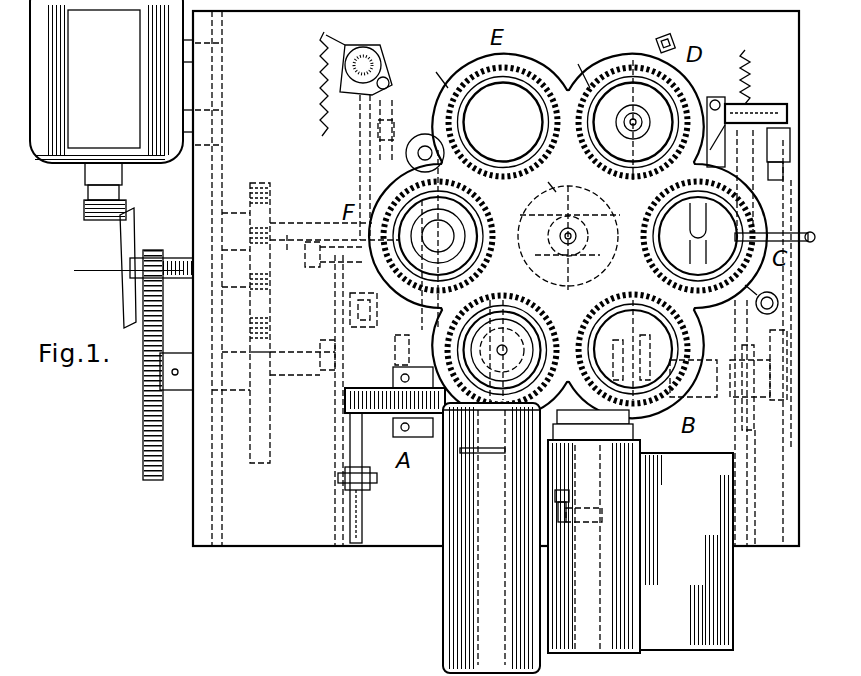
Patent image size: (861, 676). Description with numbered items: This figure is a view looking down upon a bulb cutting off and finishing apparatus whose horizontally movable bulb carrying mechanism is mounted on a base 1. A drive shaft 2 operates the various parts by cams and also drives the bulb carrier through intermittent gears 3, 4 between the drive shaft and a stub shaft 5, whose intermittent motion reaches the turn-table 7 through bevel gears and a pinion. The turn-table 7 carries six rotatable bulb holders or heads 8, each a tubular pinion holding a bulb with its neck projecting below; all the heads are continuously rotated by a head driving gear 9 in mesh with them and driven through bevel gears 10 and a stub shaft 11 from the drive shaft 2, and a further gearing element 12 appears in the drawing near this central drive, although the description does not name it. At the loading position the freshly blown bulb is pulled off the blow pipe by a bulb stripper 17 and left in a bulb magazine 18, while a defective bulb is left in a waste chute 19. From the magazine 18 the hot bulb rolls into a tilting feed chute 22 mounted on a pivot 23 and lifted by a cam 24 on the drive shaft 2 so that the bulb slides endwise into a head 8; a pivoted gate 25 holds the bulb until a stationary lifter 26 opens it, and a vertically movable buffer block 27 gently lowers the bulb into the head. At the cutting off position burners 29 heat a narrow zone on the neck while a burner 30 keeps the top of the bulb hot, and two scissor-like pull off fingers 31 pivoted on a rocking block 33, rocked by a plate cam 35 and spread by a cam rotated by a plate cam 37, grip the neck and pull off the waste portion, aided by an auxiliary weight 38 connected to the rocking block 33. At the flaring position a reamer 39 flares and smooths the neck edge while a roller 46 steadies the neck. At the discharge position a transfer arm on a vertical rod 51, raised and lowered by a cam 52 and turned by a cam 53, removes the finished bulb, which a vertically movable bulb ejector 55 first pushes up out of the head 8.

The base 1 is at (248, 165).
The drive shaft 2 is at (143, 375).
The intermittent gear 3 is at (262, 355).
The intermittent gear 4 is at (262, 212).
The stub shaft 5 is at (287, 252).
The turn-table 7 is at (435, 74).
The bulb holder or head 8 is at (465, 115).
The head driving gear 9 is at (572, 147).
The bevel gears 10 is at (597, 179).
The stub shaft 11 is at (562, 255).
The gear 12 is at (543, 179).
The bulb stripper 17 is at (630, 428).
The bulb magazine 18 is at (594, 546).
The waste chute 19 is at (686, 551).
The tilting feed chute 22 is at (491, 538).
The pivot 23 is at (352, 413).
The cam 24 is at (330, 402).
The pivoted gate 25 is at (490, 455).
The stationary lifter 26 is at (432, 440).
The buffer block 27 is at (502, 370).
The burners 29 is at (761, 309).
The burner 30 is at (775, 226).
The pull off fingers 31 is at (698, 236).
The rocking block 33 is at (722, 97).
The plate cam 35 is at (780, 400).
The plate cam 37 is at (748, 432).
The auxiliary weight 38 is at (790, 104).
The reamer 39 is at (571, 71).
The roller 46 is at (624, 105).
The vertical rod 51 is at (368, 58).
The cam 52 is at (352, 340).
The cam 53 is at (402, 350).
The bulb ejector 55 is at (420, 240).